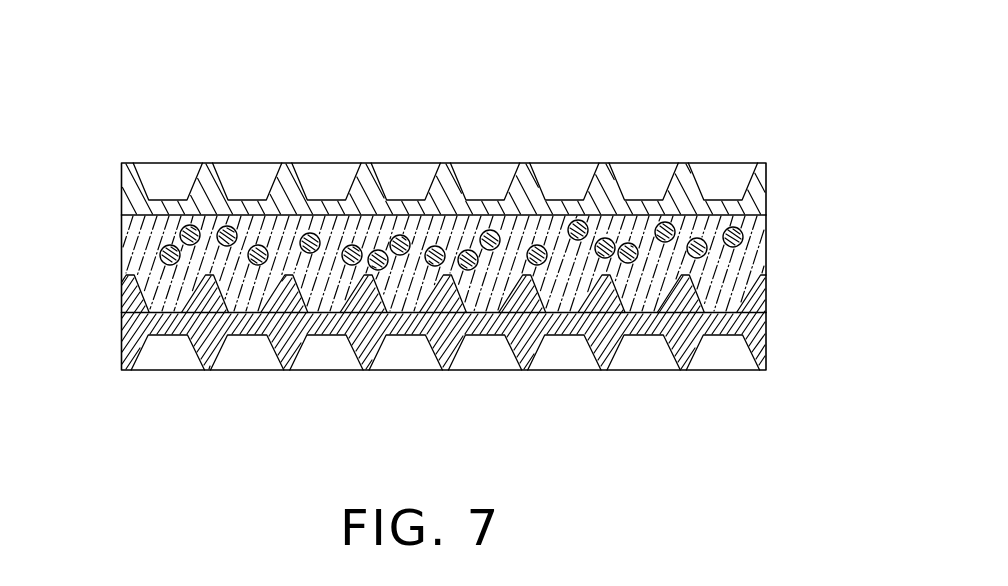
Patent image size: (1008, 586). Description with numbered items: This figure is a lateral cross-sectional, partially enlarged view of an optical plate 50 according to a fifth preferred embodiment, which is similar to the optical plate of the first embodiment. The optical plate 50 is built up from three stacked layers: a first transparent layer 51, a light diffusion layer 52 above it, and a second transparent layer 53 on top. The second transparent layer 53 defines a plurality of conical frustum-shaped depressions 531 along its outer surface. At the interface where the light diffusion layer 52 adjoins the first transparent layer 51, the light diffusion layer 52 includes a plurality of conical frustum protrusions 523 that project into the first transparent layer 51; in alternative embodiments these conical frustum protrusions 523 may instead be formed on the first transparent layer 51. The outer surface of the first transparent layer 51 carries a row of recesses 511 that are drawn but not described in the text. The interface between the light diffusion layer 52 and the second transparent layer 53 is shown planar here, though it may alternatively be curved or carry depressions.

The optical plate 50 is at (477, 48).
The first transparent layer 51 is at (444, 342).
The bottom grooves 511 is at (718, 343).
The conical frustum protrusions 523 is at (152, 303).
The light diffusion layer 52 is at (753, 252).
The second transparent layer 53 is at (496, 198).
The conical frustum-shaped depressions 531 is at (735, 186).